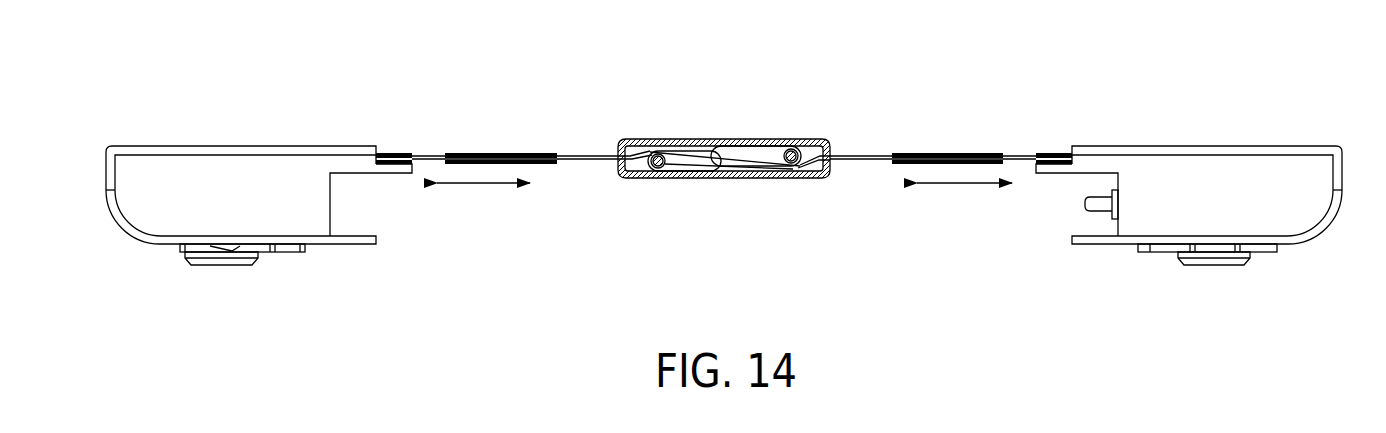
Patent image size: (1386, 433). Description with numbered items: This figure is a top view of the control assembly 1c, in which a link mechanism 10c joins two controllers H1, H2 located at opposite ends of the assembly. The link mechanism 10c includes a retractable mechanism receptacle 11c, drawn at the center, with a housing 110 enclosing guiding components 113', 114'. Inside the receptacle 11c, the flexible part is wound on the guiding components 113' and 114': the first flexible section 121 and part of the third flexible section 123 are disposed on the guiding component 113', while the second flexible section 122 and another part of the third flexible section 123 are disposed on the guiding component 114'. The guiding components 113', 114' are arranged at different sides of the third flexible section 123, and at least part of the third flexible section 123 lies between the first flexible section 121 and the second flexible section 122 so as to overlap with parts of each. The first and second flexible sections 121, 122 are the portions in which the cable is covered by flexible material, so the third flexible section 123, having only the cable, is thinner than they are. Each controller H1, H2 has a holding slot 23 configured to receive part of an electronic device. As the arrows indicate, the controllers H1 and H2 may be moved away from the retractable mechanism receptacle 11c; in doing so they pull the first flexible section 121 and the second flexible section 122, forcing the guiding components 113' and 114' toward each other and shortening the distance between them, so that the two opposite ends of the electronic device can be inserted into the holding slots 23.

The control assembly 1c is at (210, 37).
The controller H1 is at (243, 150).
The controller H2 is at (1213, 150).
The holding slot 23 is at (357, 208).
The link mechanism 10c is at (808, 223).
The retractable mechanism receptacle 11c is at (725, 185).
The case 110 is at (670, 178).
The guiding component 114' is at (650, 124).
The guiding component 113' is at (798, 121).
The third flexible section 123 is at (722, 160).
The first flexible section 121 is at (516, 153).
The second flexible section 122 is at (944, 153).